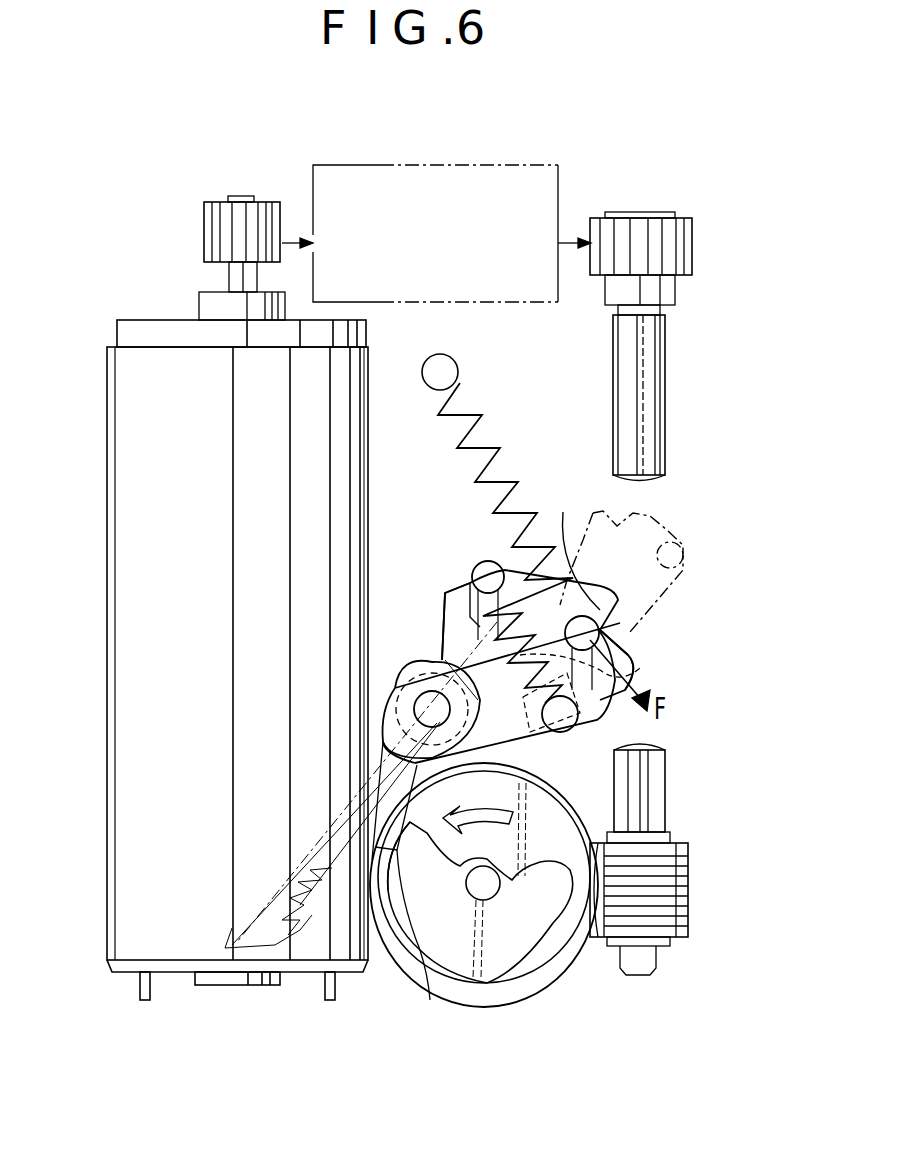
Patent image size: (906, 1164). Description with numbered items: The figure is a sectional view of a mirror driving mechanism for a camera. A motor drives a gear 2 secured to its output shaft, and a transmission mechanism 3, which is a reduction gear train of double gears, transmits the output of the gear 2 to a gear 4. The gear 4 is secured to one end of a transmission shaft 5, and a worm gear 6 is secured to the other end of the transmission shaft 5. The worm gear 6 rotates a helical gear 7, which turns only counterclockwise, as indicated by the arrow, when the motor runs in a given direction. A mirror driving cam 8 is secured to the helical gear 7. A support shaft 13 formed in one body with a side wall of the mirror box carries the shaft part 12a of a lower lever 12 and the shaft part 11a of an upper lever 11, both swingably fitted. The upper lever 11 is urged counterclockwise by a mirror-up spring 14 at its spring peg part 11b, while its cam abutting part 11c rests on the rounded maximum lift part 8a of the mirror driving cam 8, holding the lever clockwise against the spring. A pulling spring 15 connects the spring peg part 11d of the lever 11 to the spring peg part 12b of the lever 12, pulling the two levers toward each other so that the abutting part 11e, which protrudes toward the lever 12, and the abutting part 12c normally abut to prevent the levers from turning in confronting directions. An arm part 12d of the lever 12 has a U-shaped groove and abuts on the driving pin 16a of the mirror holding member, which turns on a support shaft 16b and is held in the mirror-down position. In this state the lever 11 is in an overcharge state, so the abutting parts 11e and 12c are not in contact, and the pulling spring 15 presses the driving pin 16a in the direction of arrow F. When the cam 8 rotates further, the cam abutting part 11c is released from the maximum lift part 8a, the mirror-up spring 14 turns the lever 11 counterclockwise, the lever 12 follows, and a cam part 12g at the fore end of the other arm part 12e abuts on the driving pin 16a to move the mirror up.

The gear 2 is at (204, 234).
The transmission mechanism 3 is at (337, 165).
The gear 4 is at (650, 213).
The transmission shaft 5 is at (645, 380).
The worm gear 6 is at (690, 888).
The helical gear 7 is at (524, 1006).
The mirror driving cam 8 is at (543, 963).
The maximum lift part 8a is at (410, 975).
The lever 11 is at (605, 715).
The shaft part 11a is at (432, 709).
The spring peg part 11b is at (628, 632).
The cam abutting part 11c is at (430, 1000).
The spring peg part 11d is at (566, 738).
The abutting part 11e is at (445, 603).
The lever 12 is at (455, 655).
The shaft part 12a is at (425, 708).
The spring peg part 12b is at (478, 565).
The abutting part 12c is at (640, 668).
The arm part 12d is at (563, 540).
The arm part 12e is at (635, 672).
The cam part 12g is at (622, 652).
The support shaft 13 is at (332, 686).
The mirror-up spring 14 is at (490, 440).
The pulling spring 15 is at (448, 593).
The driving pin 16a is at (595, 512).
The support shaft 16b is at (678, 550).